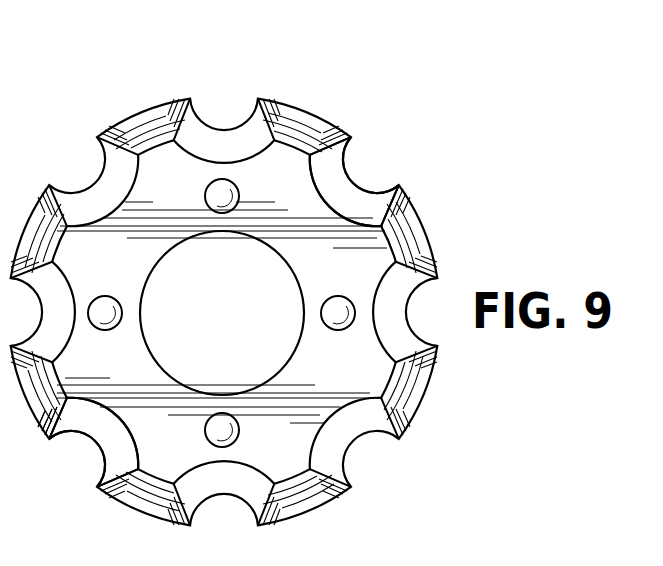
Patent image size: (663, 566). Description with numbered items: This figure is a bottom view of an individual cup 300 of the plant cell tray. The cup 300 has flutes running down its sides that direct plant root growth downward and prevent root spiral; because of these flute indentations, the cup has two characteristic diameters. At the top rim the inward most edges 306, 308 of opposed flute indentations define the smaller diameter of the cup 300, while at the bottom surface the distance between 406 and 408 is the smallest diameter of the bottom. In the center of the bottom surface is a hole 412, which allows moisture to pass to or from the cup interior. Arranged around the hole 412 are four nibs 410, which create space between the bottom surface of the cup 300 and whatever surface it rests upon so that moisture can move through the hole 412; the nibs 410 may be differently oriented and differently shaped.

The cup 300 is at (121, 94).
The inward most edge along the top rim 306 is at (350, 162).
The inward most edge along the top rim 308 is at (90, 468).
The bottom surface smallest-diameter point 406 is at (360, 178).
The bottom surface smallest-diameter point 408 is at (93, 444).
The nib 410 is at (122, 314).
The hole 412 is at (278, 250).